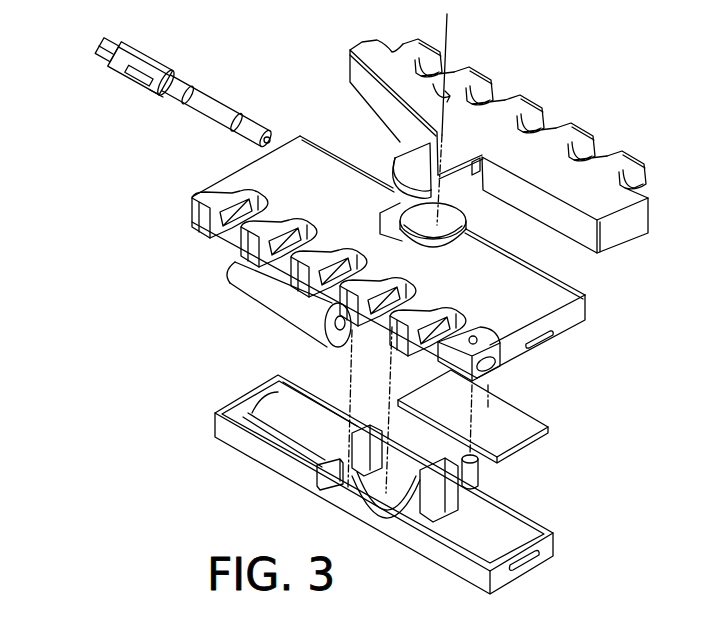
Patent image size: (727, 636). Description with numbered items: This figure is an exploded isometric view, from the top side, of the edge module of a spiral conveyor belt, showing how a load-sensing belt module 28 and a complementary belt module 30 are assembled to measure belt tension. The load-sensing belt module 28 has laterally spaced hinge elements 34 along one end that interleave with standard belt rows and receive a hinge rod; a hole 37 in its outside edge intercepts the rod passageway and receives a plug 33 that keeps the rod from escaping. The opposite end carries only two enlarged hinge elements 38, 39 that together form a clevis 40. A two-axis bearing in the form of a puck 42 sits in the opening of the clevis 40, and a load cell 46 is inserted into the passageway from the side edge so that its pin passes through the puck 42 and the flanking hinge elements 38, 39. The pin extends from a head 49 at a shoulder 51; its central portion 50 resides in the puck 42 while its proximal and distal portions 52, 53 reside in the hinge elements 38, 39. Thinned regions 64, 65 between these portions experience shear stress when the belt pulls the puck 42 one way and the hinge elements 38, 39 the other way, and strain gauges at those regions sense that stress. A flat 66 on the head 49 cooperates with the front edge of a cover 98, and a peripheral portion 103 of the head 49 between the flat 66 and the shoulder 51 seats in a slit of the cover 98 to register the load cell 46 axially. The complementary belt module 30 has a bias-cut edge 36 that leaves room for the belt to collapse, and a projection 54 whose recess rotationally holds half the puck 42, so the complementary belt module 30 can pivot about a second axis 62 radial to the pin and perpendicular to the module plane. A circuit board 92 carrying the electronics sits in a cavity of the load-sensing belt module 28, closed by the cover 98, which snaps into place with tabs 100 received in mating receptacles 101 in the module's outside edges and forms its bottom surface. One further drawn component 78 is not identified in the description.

The load-sensing belt module 28 is at (213, 181).
The complementary belt module 30 is at (632, 238).
The plug 33 is at (480, 476).
The hinge elements 34 is at (196, 230).
The bias-cut edge 36 is at (357, 72).
The hole 37 is at (493, 336).
The enlarged hinge element 38 is at (572, 297).
The enlarged hinge element 39 is at (312, 134).
The clevis 40 is at (380, 221).
The puck 42 is at (462, 221).
The load cell 46 is at (105, 42).
The head 49 is at (130, 43).
The central portion 50 is at (220, 113).
The shoulder 51 is at (158, 96).
The proximal portion 52 is at (175, 100).
The distal portion 53 is at (257, 139).
The projection 54 is at (408, 158).
The second axis 62 is at (449, 30).
The thinned region 64 is at (197, 88).
The thinned region 65 is at (245, 113).
The flat 66 is at (133, 72).
The roller 78 is at (277, 272).
The circuit board 92 is at (540, 425).
The cover 98 is at (553, 546).
The tabs 100 is at (532, 565).
The receptacles 101 is at (555, 340).
The peripheral portion 103 is at (157, 93).